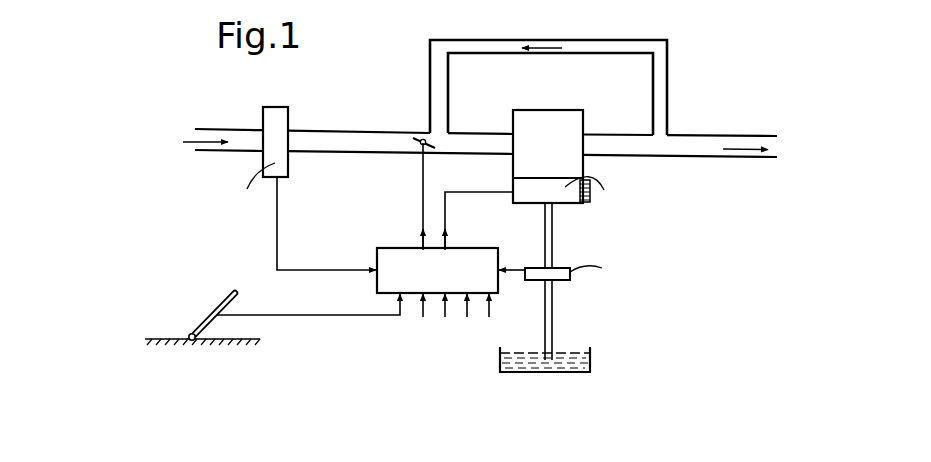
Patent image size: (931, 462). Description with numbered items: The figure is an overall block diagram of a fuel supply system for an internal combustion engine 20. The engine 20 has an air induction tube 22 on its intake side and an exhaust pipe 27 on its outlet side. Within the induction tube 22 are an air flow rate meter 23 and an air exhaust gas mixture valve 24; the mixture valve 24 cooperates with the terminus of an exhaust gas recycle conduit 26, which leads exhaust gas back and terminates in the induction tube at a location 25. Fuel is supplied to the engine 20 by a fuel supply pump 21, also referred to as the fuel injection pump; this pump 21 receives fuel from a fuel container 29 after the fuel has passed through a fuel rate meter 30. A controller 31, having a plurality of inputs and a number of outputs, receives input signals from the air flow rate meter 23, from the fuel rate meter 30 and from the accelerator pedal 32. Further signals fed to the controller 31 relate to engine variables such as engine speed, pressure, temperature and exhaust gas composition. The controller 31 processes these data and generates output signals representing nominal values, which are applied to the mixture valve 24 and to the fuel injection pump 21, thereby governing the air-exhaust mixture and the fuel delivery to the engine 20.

The internal combustion engine 20 is at (540, 118).
The fuel supply pump 21 is at (572, 200).
The air induction tube 22 is at (377, 152).
The air flow rate meter 23 is at (283, 115).
The air exhaust gas mixture valve 24 is at (413, 140).
The location where the exhaust gas recycle conduit terminates 25 is at (438, 133).
The exhaust gas recycle conduit 26 is at (533, 43).
The exhaust pipe 27 is at (702, 150).
The fuel container 29 is at (582, 365).
The fuel rate meter 30 is at (566, 279).
The controller 31 is at (377, 253).
The accelerator pedal 32 is at (216, 341).